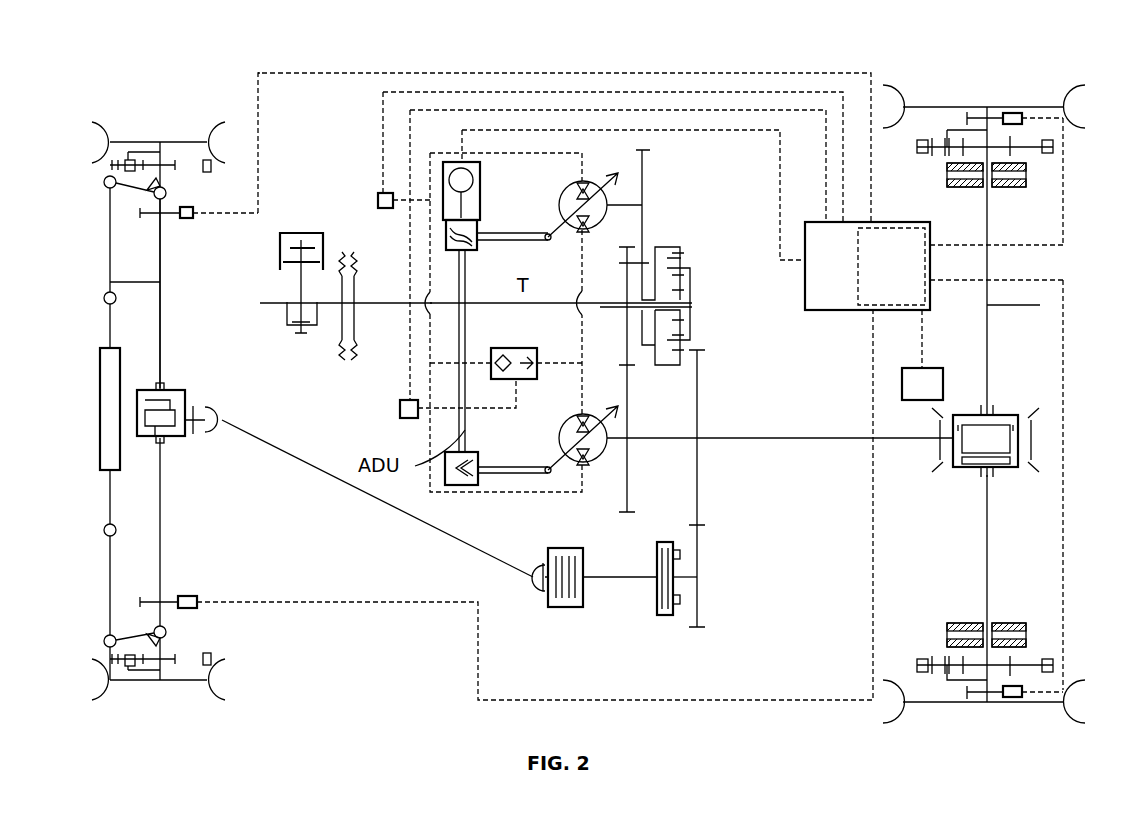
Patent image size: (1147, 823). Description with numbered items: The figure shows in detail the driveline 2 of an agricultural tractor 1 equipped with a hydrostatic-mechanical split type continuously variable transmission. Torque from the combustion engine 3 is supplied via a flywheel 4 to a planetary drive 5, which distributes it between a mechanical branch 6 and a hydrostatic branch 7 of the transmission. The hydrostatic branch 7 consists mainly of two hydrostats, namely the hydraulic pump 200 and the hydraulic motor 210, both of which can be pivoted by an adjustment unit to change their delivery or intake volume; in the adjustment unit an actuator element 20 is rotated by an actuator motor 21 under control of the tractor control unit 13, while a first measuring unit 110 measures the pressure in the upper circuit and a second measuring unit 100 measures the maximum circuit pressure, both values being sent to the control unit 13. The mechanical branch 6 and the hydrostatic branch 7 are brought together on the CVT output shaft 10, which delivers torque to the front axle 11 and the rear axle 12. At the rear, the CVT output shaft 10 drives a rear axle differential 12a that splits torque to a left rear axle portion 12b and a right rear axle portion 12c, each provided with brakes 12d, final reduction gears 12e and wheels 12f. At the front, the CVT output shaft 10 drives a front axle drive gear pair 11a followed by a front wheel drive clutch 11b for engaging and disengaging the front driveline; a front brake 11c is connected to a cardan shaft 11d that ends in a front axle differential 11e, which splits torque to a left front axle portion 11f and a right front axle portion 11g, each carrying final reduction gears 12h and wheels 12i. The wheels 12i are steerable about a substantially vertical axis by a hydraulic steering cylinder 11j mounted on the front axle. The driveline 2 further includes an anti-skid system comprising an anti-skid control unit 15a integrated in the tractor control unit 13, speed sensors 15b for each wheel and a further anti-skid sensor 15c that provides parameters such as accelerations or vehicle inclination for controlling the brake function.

The agricultural tractor 1 is at (196, 69).
The driveline 2 is at (389, 355).
The combustion engine 3 is at (300, 232).
The flywheel 4 is at (340, 272).
The planetary drive 5 is at (685, 268).
The mechanical branch 6 is at (596, 302).
The hydrostatic branch 7 is at (570, 178).
The CVT output shaft 10 is at (652, 440).
The front axle 11 is at (110, 282).
The front axle drive gear pair 11a is at (698, 520).
The front wheel drive clutch 11b is at (665, 616).
The front brake 11c is at (575, 608).
The cardan shaft 11d is at (413, 518).
The front axle differential 11e is at (185, 392).
The left front axle portion 11f is at (160, 543).
The right front axle portion 11g is at (160, 304).
The hydraulic steering cylinder 11j is at (107, 416).
The rear axle 12 is at (987, 552).
The rear axle differential 12a is at (995, 425).
The left rear axle portion 12b is at (1018, 560).
The right rear axle portion 12c is at (1040, 305).
The brakes 12d is at (1028, 175).
The final reduction gears 12e is at (1010, 140).
The wheels 12f is at (1068, 105).
The final reduction gears 12h is at (128, 158).
The wheels 12i is at (108, 146).
The tractor control unit 13 is at (822, 312).
The anti-skid control unit 15a is at (862, 312).
The speed sensors 15b is at (186, 207).
The anti-skid sensor 15c is at (928, 384).
The actuator element 20 is at (465, 336).
The actuator motor 21 is at (470, 207).
The second measuring unit 100 is at (400, 412).
The first measuring unit 110 is at (378, 200).
The hydraulic pump 200 is at (562, 200).
The hydraulic motor 210 is at (562, 428).